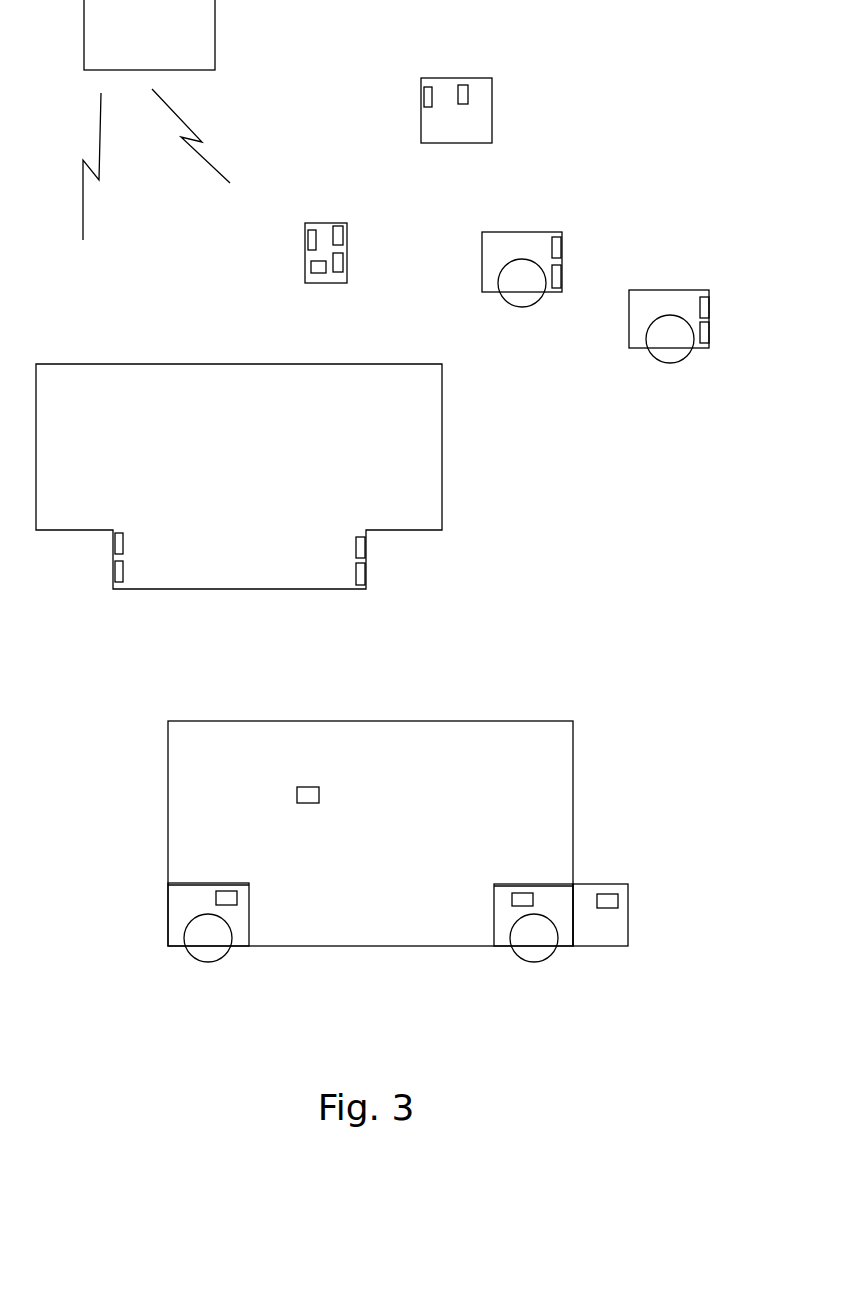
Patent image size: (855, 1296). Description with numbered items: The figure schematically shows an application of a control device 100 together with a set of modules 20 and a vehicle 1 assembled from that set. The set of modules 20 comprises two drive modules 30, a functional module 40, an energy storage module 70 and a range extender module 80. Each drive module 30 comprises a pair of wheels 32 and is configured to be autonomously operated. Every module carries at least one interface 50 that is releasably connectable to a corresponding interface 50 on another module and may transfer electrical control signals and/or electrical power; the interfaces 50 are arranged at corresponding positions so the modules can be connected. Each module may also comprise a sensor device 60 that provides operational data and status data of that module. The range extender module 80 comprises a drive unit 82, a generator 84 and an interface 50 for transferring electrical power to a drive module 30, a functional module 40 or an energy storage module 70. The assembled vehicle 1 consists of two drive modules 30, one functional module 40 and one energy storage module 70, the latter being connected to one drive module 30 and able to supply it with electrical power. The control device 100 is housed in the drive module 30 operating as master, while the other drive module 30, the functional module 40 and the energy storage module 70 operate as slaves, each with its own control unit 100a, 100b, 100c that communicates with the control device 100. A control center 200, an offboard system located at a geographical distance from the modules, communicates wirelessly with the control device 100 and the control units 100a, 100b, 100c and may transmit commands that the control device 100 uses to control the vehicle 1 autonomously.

The vehicle 1 is at (370, 835).
The set of modules 20 is at (605, 476).
The drive module 30 is at (517, 232).
The wheels 32 is at (521, 308).
The functional module 40 is at (442, 462).
The interface 50 is at (424, 101).
The sensor device 60 is at (468, 92).
The energy storage module 70 is at (492, 100).
The range extender module 80 is at (347, 255).
The drive unit 82 is at (347, 266).
The generator 84 is at (305, 272).
The control device 100 is at (249, 893).
The control unit 100a is at (510, 906).
The control unit 100b is at (295, 798).
The control unit 100c is at (610, 893).
The control center 200 is at (149, 35).